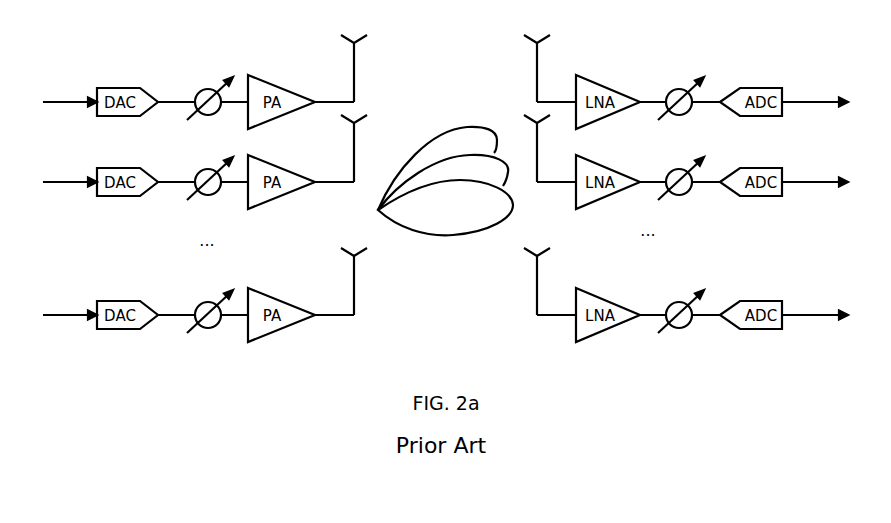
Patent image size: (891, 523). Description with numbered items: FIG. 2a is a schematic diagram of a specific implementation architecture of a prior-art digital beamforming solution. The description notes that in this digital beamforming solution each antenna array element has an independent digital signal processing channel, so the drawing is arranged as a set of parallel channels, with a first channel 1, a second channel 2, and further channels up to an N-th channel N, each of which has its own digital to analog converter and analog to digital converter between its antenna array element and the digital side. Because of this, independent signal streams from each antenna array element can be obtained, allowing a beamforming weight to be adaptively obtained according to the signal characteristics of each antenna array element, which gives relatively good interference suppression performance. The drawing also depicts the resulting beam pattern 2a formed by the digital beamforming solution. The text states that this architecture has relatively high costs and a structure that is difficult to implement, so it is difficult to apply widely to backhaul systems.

The first transmit/receive channel (T1(n), R1(n)) 1 is at (445, 82).
The second transmit/receive channel (T2(n), R2(n)) 2 is at (445, 162).
The N-th transmit/receive channel (TN(n), RN(n)) N is at (445, 295).
The digital beamforming (DBF) beam pattern 2a is at (445, 143).